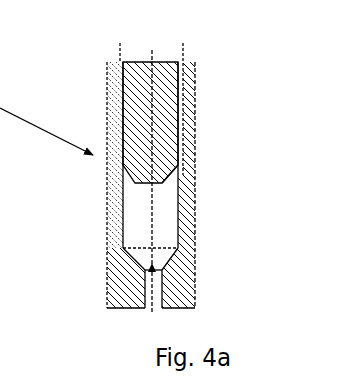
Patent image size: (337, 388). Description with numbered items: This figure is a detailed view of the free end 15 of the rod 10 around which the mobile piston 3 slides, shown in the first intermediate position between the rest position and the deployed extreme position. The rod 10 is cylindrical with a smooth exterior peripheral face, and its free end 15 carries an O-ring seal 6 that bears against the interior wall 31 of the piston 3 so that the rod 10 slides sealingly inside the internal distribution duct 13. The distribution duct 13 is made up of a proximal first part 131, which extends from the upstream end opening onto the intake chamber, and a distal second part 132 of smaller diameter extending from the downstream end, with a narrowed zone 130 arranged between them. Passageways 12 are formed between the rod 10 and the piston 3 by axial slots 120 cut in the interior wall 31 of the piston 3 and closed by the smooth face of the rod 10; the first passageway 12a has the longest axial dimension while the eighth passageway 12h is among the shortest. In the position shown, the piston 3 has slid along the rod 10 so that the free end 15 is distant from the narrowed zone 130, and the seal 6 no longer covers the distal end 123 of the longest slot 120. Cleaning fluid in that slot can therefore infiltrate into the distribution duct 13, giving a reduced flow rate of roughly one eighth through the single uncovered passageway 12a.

The rod 10 is at (158, 68).
The passageways 12 is at (164, 175).
The eighth passageway 12h is at (120, 86).
The first passageway 12a is at (187, 119).
The O-ring seal 6 is at (132, 157).
The slots 120 is at (178, 158).
The distal end 123 is at (160, 200).
The internal distribution duct 13 is at (165, 230).
The narrowed zone 130 is at (196, 256).
The distal second part 132 is at (163, 297).
The free end 15 is at (142, 205).
The interior wall 31 is at (133, 226).
The proximal first part 131 is at (107, 250).
The piston 3 is at (115, 308).